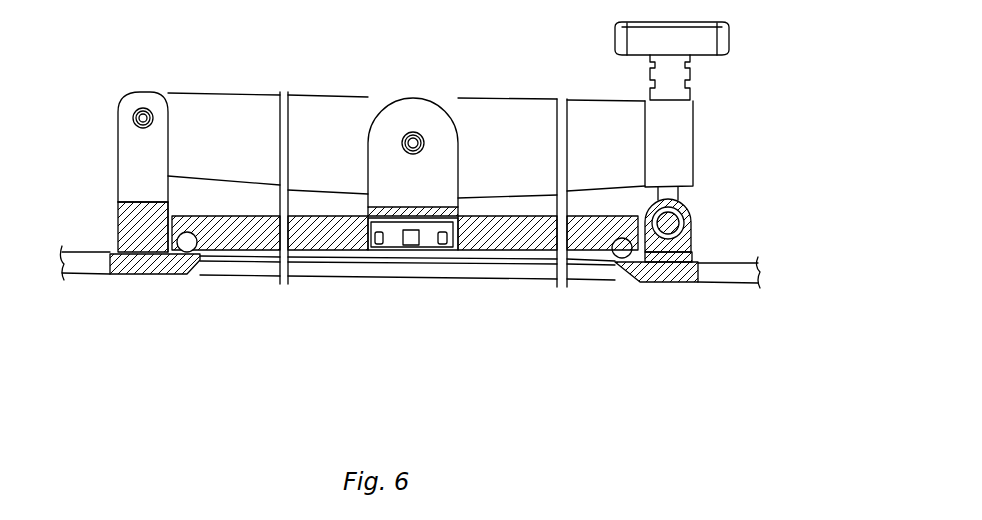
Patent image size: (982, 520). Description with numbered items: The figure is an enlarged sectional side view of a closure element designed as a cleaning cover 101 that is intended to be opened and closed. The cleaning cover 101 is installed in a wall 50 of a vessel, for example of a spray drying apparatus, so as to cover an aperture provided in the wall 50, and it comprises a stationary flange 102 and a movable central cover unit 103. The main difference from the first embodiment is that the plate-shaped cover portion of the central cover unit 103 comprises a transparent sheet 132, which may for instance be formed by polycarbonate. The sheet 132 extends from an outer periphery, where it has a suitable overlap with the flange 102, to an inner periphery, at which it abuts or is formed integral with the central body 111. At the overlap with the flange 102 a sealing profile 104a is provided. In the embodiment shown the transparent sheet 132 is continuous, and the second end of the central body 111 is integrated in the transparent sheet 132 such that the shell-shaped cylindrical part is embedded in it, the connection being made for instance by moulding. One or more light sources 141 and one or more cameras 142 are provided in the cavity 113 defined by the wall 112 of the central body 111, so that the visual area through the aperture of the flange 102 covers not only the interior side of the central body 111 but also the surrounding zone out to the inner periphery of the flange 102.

The cleaning cover 101 is at (186, 72).
The flange 102 is at (148, 273).
The central cover unit 103 is at (315, 292).
The sealing profile 104a is at (200, 258).
The central body 111 is at (435, 170).
The wall 112 is at (446, 234).
The cavity 113 is at (428, 240).
The transparent sheet 132 is at (513, 243).
The light source 141 is at (456, 208).
The camera 142 is at (400, 233).
The wall 50 is at (733, 272).